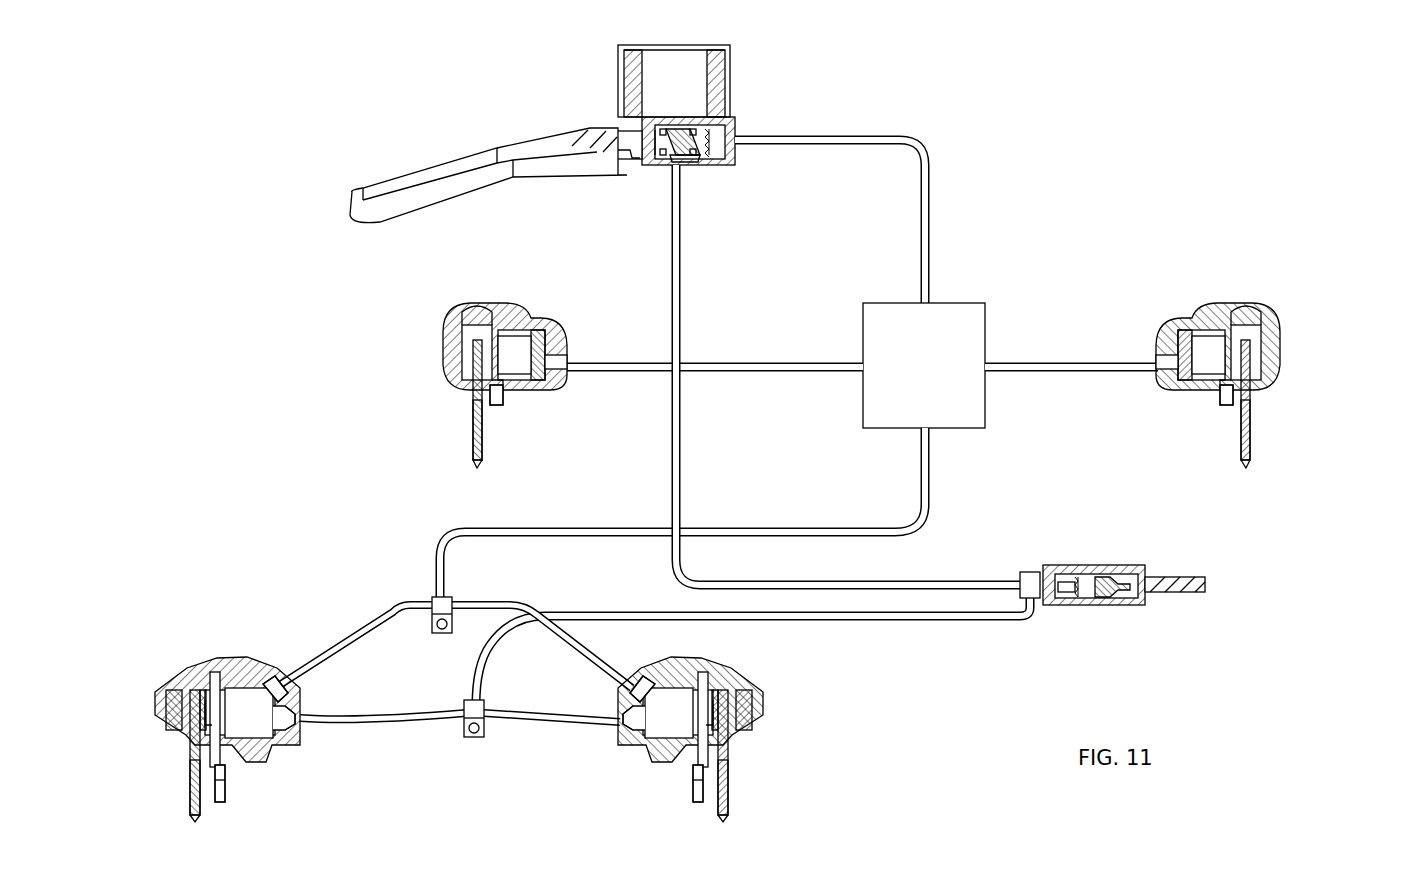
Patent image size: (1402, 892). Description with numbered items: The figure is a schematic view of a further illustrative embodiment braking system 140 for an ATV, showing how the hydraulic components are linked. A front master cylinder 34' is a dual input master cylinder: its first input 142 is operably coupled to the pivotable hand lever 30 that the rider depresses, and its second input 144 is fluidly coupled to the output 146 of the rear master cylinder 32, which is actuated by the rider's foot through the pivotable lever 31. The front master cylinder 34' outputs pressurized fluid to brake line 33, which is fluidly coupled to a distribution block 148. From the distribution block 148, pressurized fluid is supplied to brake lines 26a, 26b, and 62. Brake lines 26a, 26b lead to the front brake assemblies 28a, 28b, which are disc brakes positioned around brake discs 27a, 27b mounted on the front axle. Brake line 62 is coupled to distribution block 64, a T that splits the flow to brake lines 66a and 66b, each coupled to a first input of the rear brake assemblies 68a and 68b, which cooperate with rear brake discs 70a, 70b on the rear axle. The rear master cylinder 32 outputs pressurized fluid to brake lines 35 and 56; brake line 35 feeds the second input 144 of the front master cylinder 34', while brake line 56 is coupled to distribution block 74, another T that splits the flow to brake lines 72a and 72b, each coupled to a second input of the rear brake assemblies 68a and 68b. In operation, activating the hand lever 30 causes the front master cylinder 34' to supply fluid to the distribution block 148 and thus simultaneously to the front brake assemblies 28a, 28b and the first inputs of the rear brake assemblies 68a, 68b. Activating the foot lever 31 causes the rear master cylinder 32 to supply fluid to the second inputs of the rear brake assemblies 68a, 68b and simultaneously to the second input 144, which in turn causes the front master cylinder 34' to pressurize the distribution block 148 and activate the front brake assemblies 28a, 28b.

The front master cylinder 34' is at (715, 94).
The braking system 140 is at (1069, 106).
The brake line 33 is at (855, 136).
The hand lever 30 is at (476, 183).
The first input 142 is at (646, 150).
The second input 144 is at (696, 164).
The front brake assembly 28a is at (537, 305).
The front brake assembly 28b is at (1283, 313).
The brake line 26a is at (604, 362).
The brake line 26b is at (1116, 374).
The brake disc 27a is at (472, 428).
The brake disc 27b is at (1251, 428).
The distribution block 148 is at (958, 302).
The brake line 35 is at (980, 580).
The output 146 is at (1033, 572).
The rear master cylinder 32 is at (1160, 553).
The foot lever 31 is at (1208, 589).
The brake line 56 is at (982, 622).
The brake line 62 is at (437, 584).
The distribution block 64 is at (453, 606).
The brake line 66a is at (373, 630).
The brake line 66b is at (553, 636).
The rear brake assembly 68a is at (181, 655).
The rear brake assembly 68b is at (776, 696).
The brake line 72a is at (365, 724).
The brake line 72b is at (535, 724).
The distribution block 74 is at (463, 742).
The brake disc 70a is at (190, 781).
The brake disc 70b is at (730, 786).